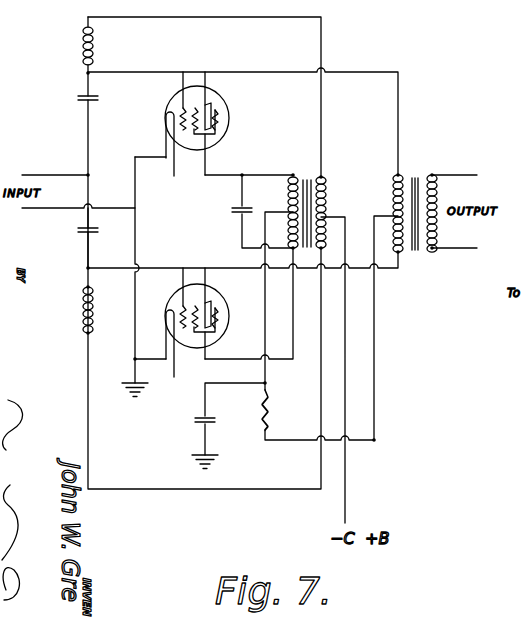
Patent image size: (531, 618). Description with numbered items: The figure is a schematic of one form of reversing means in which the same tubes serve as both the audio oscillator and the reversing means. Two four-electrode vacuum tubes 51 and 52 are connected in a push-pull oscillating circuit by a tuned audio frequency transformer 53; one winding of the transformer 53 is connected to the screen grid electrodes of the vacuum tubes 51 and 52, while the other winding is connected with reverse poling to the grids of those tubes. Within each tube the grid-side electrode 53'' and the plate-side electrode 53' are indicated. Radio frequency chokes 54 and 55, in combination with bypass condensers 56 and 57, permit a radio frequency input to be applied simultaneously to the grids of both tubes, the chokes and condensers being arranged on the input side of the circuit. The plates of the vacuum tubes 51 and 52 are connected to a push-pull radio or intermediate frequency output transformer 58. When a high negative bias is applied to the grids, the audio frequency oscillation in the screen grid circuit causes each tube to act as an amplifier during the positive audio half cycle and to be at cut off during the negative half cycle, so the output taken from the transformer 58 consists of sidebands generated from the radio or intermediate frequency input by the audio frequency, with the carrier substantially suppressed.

The vacuum tube 51 is at (226, 107).
The vacuum tube 52 is at (226, 296).
The tuned audio frequency transformer 53 is at (307, 201).
The plate of tube 53' is at (226, 225).
The grid of tube 53'' is at (160, 213).
The radio frequency choke 54 is at (72, 46).
The radio frequency choke 55 is at (72, 310).
The bypass condenser 56 is at (97, 92).
The bypass condenser 57 is at (97, 238).
The push-pull radio or intermediate frequency output transformer 58 is at (435, 225).